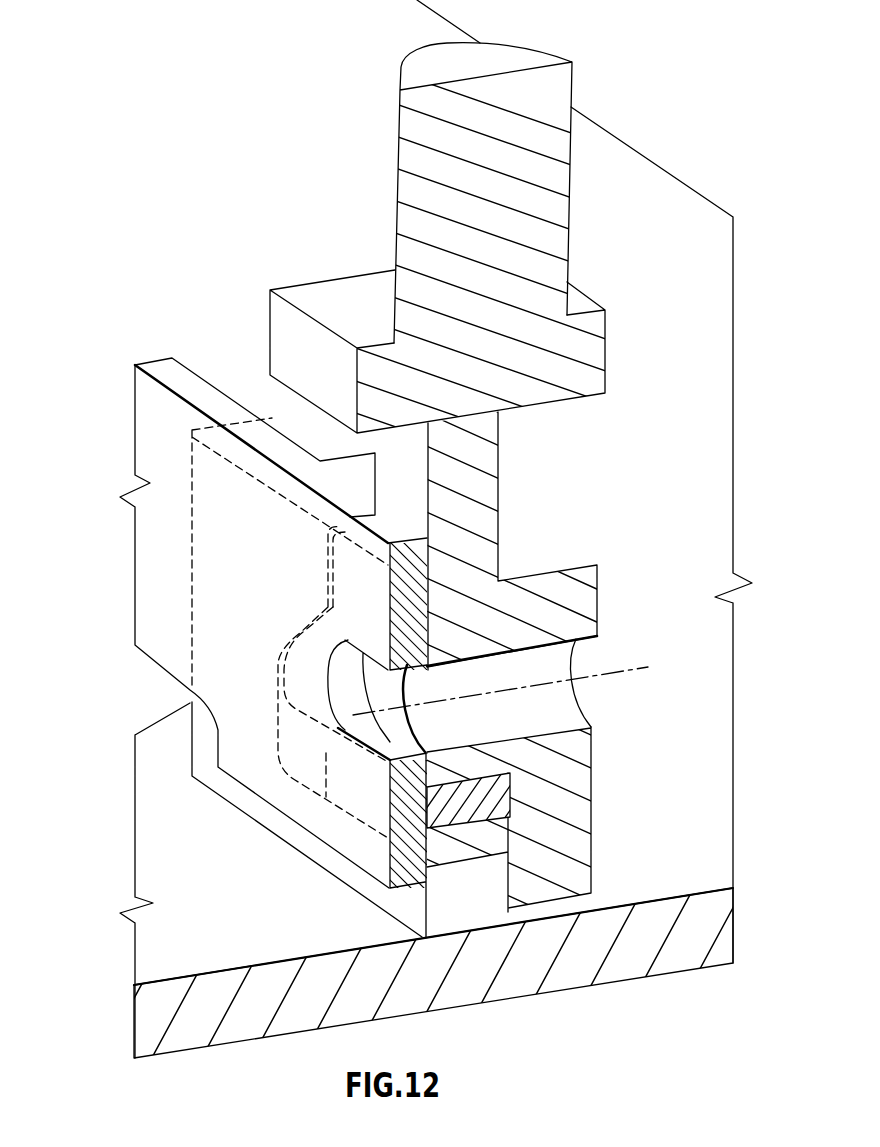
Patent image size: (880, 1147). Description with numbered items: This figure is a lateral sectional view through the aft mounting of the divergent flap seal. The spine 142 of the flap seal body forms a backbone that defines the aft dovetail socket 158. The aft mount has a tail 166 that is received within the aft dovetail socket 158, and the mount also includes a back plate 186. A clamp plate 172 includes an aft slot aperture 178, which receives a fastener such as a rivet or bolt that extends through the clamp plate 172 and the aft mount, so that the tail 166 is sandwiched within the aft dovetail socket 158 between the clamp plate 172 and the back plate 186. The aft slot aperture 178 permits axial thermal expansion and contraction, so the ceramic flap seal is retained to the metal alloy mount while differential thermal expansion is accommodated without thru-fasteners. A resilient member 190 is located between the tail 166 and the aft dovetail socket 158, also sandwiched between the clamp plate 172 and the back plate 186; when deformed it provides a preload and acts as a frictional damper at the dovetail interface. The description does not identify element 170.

The spine 142 is at (272, 420).
The aft dovetail socket 158 is at (300, 632).
The tail 166 is at (312, 670).
The pin head 170 is at (488, 62).
The clamp plate 172 is at (142, 356).
The aft slot aperture 178 is at (398, 750).
The back plate 186 is at (535, 542).
The resilient member 190 is at (512, 802).